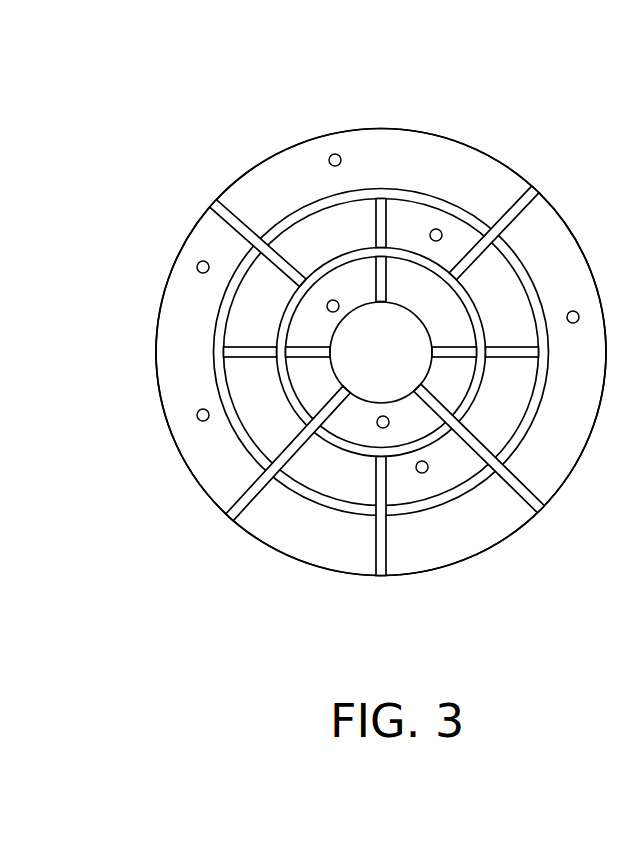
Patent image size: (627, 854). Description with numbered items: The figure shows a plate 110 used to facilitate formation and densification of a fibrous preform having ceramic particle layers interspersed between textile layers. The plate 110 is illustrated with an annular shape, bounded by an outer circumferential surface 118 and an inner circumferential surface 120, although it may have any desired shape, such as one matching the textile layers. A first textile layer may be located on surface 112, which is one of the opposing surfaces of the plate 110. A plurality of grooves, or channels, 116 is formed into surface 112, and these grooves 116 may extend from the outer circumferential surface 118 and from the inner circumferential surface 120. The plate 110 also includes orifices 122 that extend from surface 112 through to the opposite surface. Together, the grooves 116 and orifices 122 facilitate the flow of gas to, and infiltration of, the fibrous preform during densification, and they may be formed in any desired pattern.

The plate 110 is at (330, 339).
The surface 112 is at (298, 160).
The grooves 116 is at (207, 301).
The outer circumferential surface 118 is at (490, 552).
The inner circumferential surface 120 is at (357, 308).
The orifices 122 is at (437, 218).